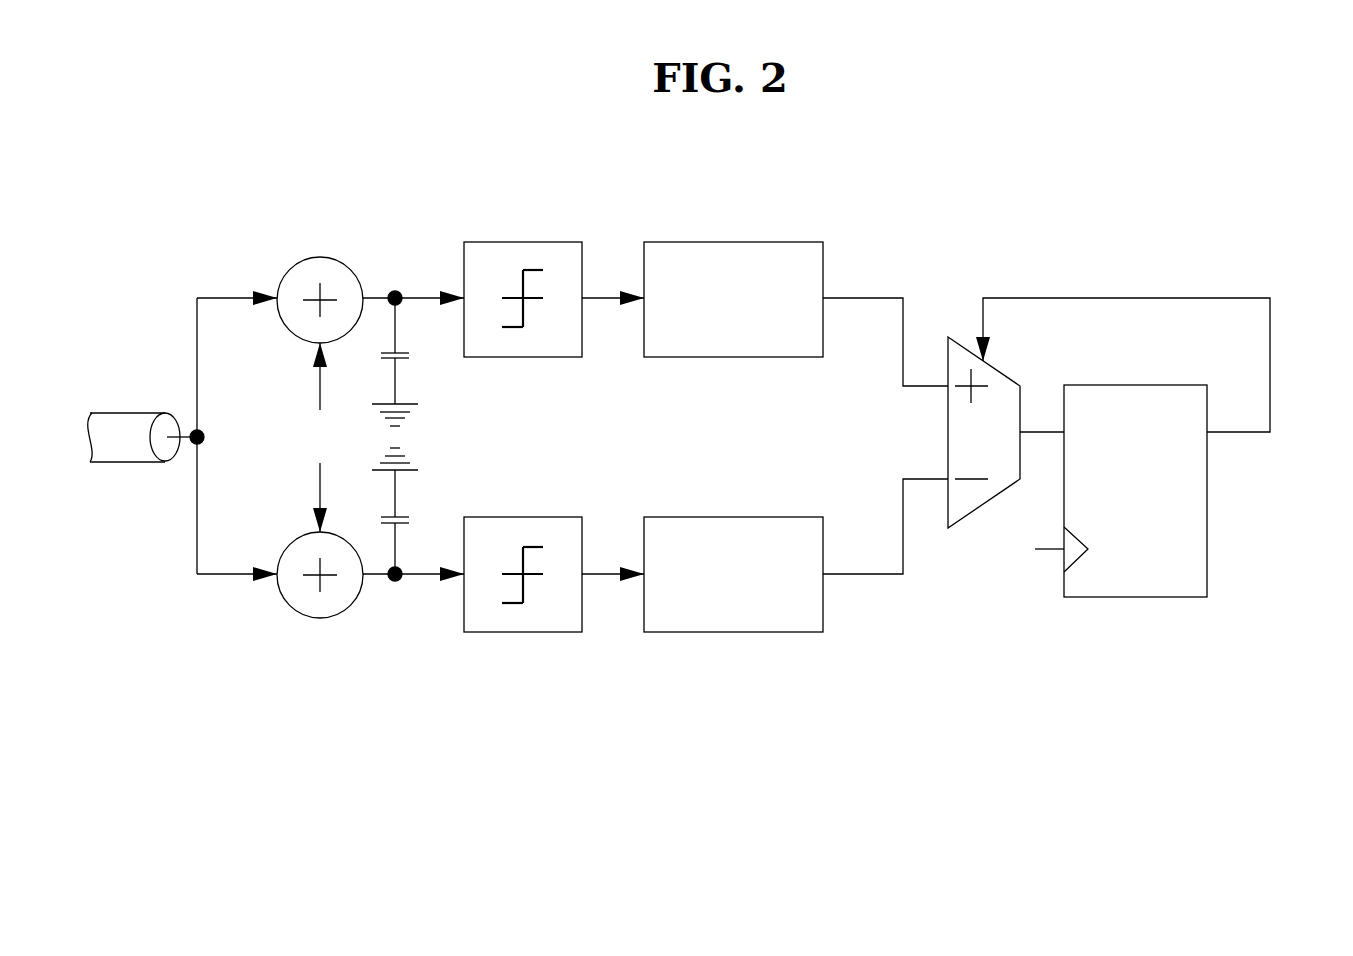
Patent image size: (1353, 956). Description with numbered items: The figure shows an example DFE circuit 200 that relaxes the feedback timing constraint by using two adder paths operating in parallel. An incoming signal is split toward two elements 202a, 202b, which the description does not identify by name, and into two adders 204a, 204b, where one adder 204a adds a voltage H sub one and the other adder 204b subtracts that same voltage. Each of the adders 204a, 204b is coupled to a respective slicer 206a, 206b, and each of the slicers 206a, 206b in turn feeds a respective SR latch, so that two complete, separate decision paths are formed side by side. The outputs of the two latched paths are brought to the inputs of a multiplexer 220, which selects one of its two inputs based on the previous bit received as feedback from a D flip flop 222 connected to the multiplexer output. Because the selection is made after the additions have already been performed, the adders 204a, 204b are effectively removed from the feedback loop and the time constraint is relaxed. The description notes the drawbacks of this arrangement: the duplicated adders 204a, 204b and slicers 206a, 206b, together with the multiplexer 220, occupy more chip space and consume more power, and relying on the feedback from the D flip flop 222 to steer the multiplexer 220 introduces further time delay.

The DFE circuit 200 is at (1222, 122).
The first summing node 202a is at (320, 257).
The second summing node 202b is at (320, 618).
The adder 204a is at (523, 242).
The adder 204b is at (523, 632).
The slicer 206a is at (733, 242).
The slicer 206b is at (733, 632).
The multiplexer 220 is at (948, 432).
The D flip flop 222 is at (1135, 597).